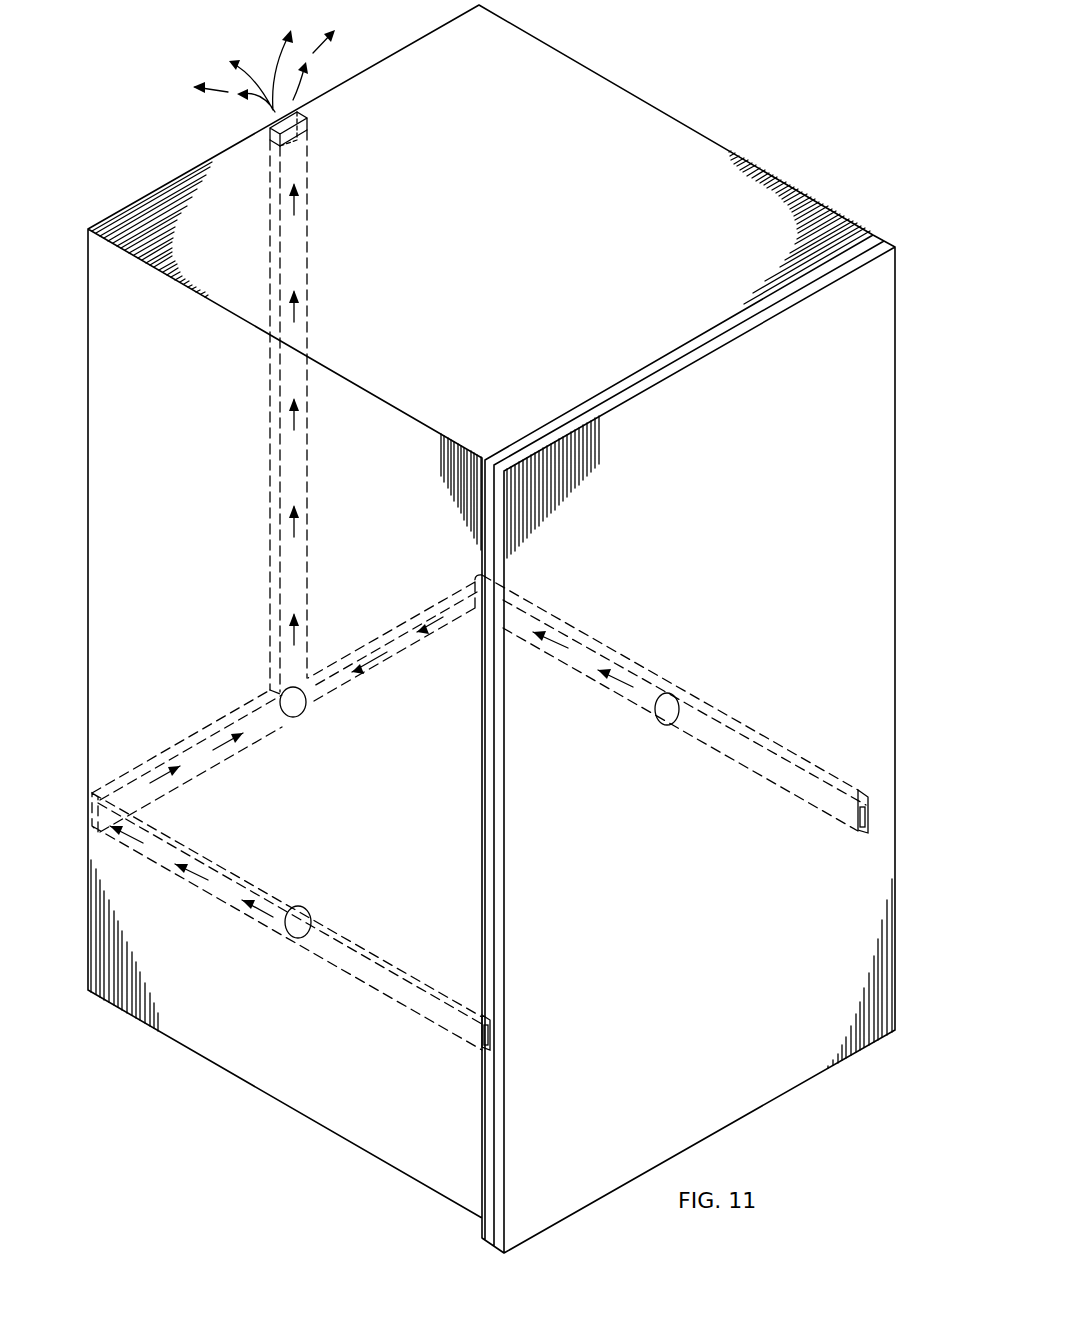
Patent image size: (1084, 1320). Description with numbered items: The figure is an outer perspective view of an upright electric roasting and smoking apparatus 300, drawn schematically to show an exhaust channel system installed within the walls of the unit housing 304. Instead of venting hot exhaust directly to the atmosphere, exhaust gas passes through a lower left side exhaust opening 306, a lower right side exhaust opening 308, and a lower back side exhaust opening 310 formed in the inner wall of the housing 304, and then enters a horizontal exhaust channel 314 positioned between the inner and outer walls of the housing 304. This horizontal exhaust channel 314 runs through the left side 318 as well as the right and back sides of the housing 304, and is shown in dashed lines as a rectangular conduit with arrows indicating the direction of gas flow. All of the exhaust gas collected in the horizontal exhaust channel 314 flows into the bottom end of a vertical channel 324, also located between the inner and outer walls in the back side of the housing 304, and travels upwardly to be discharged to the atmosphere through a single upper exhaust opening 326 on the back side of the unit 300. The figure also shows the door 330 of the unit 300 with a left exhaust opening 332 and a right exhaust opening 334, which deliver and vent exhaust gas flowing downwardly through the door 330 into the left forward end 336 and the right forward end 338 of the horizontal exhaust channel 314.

The upright electric roasting and smoking apparatus 300 is at (725, 95).
The unit housing 304 is at (98, 247).
The lower left side exhaust opening 306 is at (290, 927).
The lower right side exhaust opening 308 is at (660, 700).
The lower back side exhaust opening 310 is at (305, 703).
The horizontal exhaust channel 314 is at (157, 752).
The left side 318 is at (285, 1103).
The vertical channel 324 is at (270, 168).
The upper exhaust opening 326 is at (308, 148).
The door 330 is at (765, 1093).
The left exhaust opening 332 is at (491, 1032).
The right exhaust opening 334 is at (868, 817).
The left forward end 336 is at (500, 1062).
The right forward end 338 is at (868, 835).